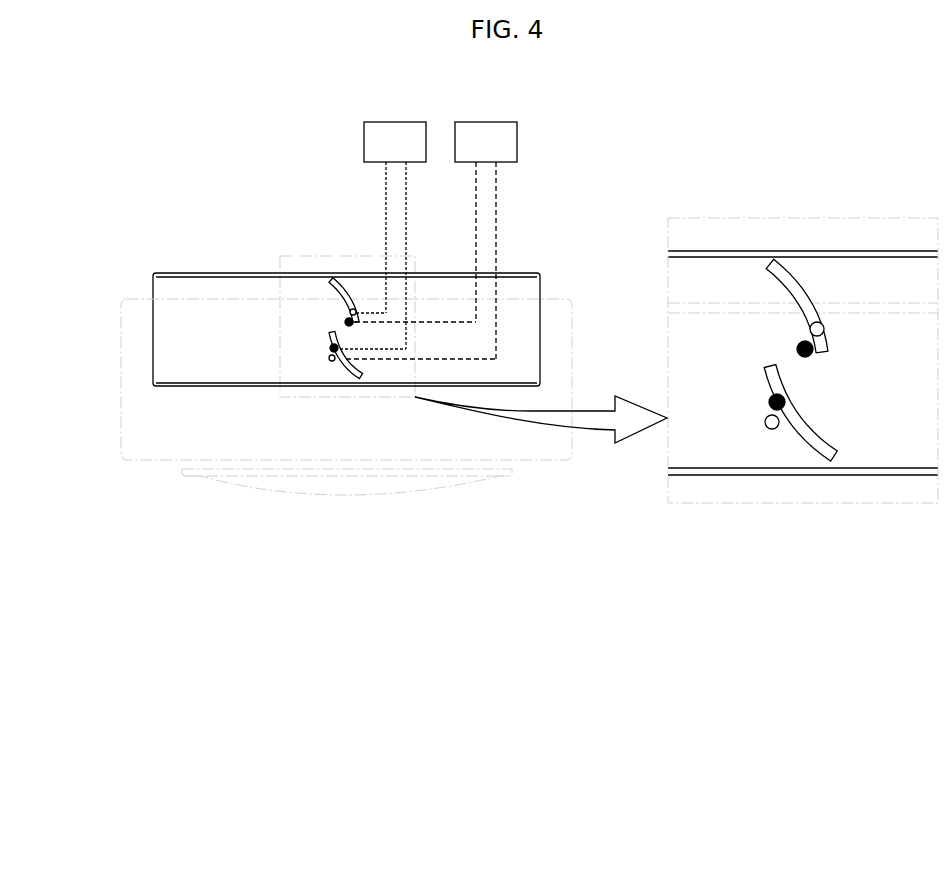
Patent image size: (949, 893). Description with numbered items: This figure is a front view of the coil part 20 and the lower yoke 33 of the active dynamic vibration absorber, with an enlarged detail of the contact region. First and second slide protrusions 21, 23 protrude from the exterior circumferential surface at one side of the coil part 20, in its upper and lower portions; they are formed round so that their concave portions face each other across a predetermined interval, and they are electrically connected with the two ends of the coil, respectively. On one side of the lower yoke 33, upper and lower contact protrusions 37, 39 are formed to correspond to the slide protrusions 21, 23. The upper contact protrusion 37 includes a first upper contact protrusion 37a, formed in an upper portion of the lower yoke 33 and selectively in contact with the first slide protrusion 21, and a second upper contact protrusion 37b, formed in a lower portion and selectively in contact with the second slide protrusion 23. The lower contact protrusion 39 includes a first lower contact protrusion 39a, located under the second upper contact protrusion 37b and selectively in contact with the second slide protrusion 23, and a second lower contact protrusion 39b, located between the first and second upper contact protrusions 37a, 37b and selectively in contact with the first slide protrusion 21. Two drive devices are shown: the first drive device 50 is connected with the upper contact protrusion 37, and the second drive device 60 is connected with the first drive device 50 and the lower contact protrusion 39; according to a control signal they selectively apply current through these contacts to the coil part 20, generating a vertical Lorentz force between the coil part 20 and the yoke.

The coil part 20 is at (160, 281).
The first slide protrusion 21 is at (331, 280).
The second slide protrusion 23 is at (331, 338).
The lower yoke 33 is at (120, 381).
The upper contact protrusion 37 is at (623, 283).
The first upper contact protrusion 37a is at (353, 309).
The second upper contact protrusion 37b is at (334, 348).
The lower contact protrusion 39 is at (747, 568).
The first lower contact protrusion 39a is at (330, 360).
The second lower contact protrusion 39b is at (348, 321).
The first drive device 50 is at (396, 122).
The second drive device 60 is at (486, 122).